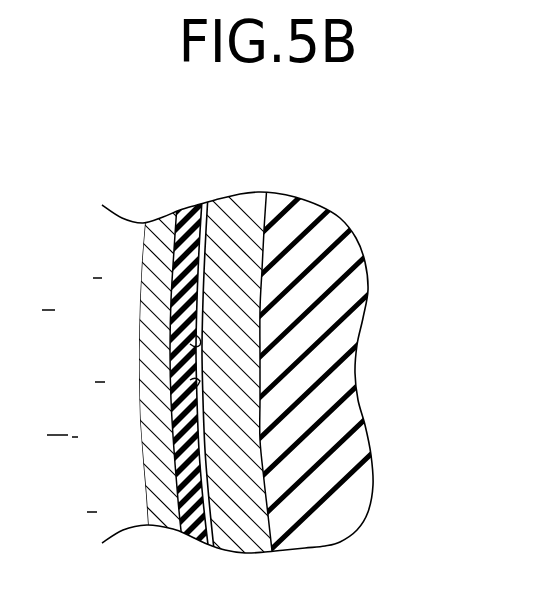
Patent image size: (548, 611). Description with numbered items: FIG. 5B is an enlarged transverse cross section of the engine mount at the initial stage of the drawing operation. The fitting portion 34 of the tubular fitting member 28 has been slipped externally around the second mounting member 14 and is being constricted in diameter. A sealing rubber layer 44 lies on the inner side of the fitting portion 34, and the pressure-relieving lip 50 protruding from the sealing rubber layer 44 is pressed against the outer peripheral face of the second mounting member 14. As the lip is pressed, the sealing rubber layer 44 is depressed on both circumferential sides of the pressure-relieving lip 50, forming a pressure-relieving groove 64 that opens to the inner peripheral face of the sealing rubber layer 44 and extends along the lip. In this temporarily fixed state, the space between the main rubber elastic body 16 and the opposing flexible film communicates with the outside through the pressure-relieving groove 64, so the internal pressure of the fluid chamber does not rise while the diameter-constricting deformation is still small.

The second mounting member 14 is at (237, 238).
The main rubber elastic body 16 is at (332, 503).
The tubular fitting member 28 is at (144, 268).
The fitting portion 34 is at (157, 475).
The sealing rubber layer 44 is at (192, 518).
The pressure-relieving lip 50 is at (197, 363).
The pressure-relieving groove 64 is at (192, 333).